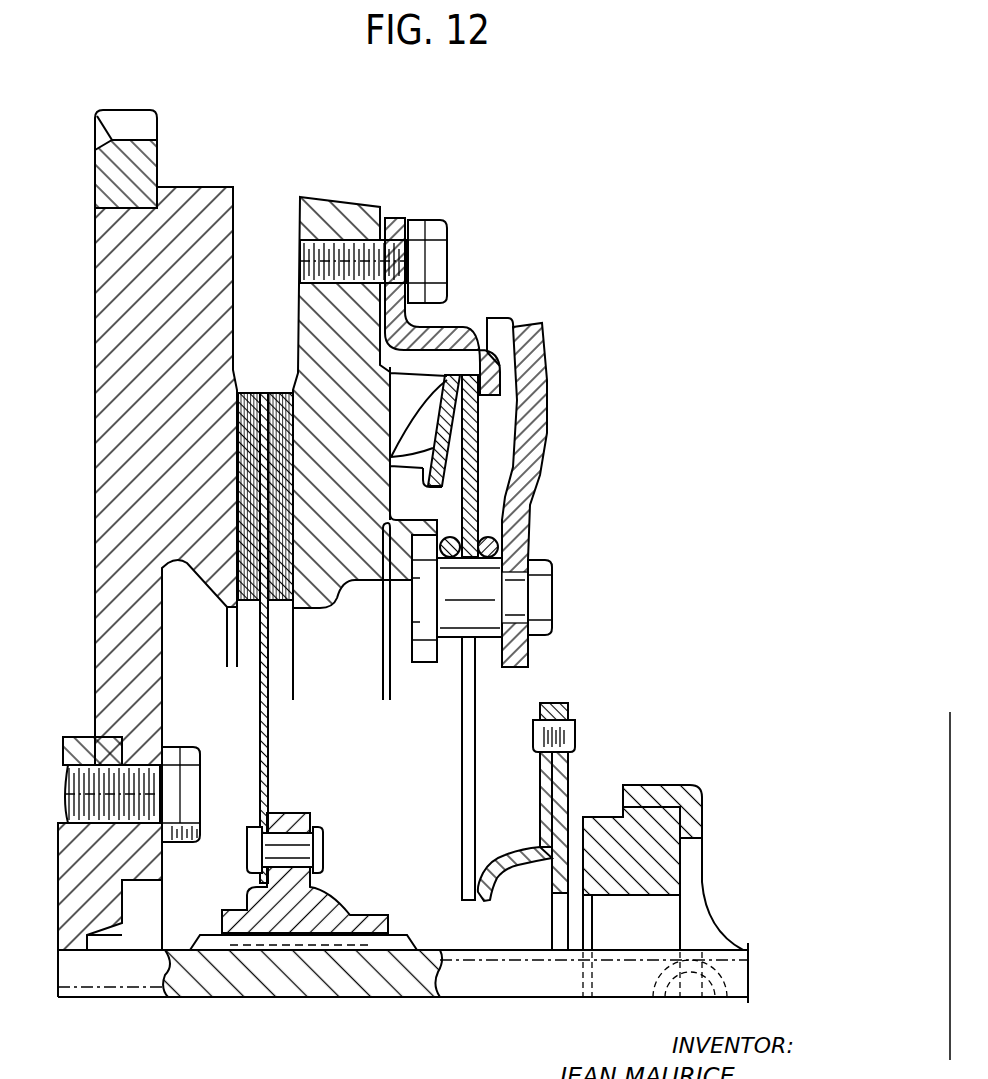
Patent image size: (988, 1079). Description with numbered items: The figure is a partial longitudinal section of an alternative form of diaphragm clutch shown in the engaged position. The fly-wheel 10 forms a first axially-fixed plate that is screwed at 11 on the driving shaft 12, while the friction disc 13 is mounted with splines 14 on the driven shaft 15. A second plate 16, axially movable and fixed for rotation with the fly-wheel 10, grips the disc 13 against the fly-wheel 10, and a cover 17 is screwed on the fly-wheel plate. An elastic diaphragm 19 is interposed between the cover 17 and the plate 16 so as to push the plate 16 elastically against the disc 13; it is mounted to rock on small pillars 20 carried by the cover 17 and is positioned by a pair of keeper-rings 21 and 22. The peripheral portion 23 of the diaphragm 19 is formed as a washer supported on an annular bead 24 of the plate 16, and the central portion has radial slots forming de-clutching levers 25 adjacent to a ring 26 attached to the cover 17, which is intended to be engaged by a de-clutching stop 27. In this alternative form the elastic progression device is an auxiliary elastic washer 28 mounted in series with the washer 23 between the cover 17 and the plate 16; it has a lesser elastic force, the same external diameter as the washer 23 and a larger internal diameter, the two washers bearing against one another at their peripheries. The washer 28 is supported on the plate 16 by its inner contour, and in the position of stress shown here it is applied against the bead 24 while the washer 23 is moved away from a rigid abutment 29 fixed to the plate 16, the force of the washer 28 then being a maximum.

The fly-wheel 10 is at (239, 216).
The screw fastening 11 is at (192, 790).
The driving shaft 12 is at (82, 748).
The friction disc 13 is at (270, 753).
The splines 14 is at (338, 943).
The driven shaft 15 is at (487, 967).
The second plate 16 is at (307, 218).
The cover 17 is at (543, 457).
The elastic diaphragm 19 is at (476, 521).
The small pillars 20 is at (460, 617).
The keeper-ring 21 is at (442, 544).
The keeper-ring 22 is at (497, 548).
The peripheral portion of the diaphragm 23 is at (478, 448).
The annular bead 24 is at (423, 382).
The de-clutching levers 25 is at (462, 785).
The ring 26 is at (540, 787).
The de-clutching stop 27 is at (640, 822).
The auxiliary elastic washer 28 is at (389, 473).
The rigid abutment 29 is at (498, 383).